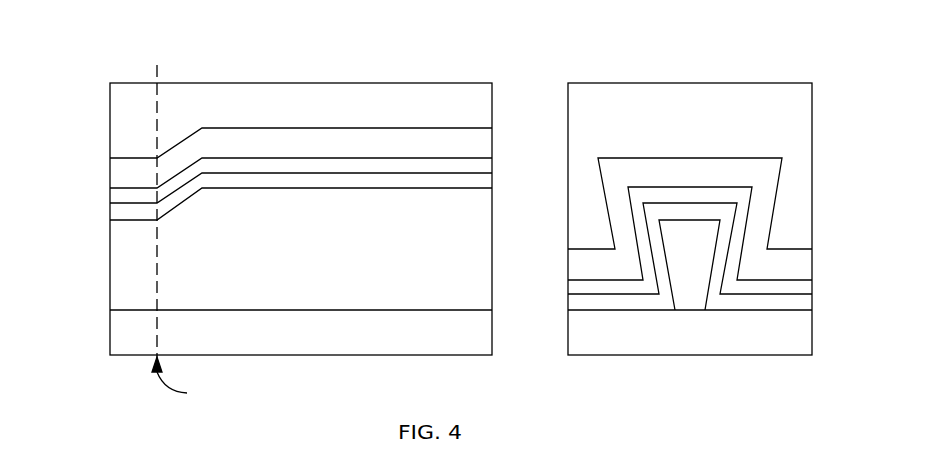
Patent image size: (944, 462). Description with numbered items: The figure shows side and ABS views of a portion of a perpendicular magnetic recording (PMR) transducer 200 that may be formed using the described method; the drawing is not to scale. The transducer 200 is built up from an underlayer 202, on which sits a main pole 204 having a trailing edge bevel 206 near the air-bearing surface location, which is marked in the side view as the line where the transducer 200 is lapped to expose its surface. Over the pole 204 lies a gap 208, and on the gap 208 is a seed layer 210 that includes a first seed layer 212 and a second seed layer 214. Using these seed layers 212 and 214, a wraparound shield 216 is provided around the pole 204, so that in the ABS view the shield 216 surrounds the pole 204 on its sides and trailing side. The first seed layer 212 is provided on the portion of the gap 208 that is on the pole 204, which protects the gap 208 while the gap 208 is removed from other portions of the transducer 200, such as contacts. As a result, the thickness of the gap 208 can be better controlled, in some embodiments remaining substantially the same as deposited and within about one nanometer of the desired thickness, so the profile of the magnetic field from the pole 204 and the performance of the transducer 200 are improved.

The PMR transducer 200 is at (451, 62).
The underlayer 202 is at (568, 323).
The main pole 204 is at (637, 267).
The trailing edge bevel 206 is at (168, 222).
The gap 208 is at (110, 211).
The seed layer 210 is at (63, 182).
The first seed layer 212 is at (568, 237).
The second seed layer 214 is at (602, 178).
The wraparound shield 216 is at (110, 130).